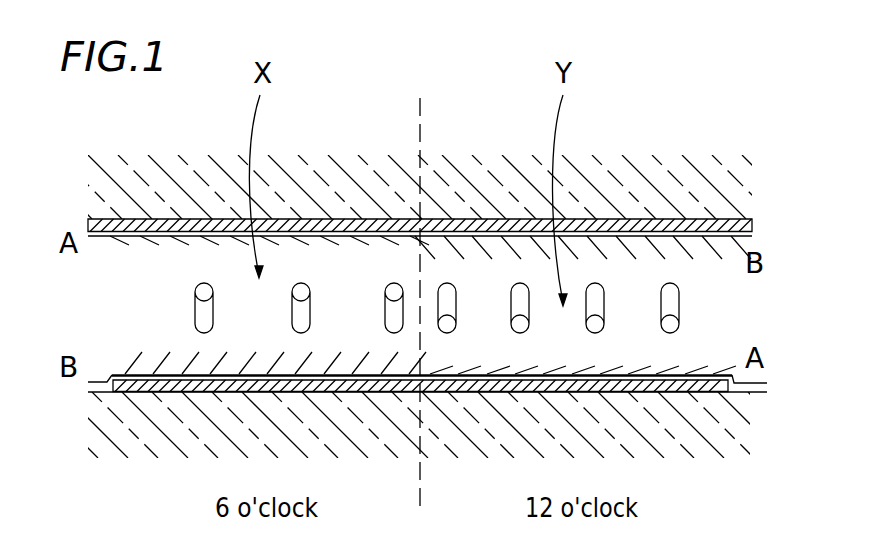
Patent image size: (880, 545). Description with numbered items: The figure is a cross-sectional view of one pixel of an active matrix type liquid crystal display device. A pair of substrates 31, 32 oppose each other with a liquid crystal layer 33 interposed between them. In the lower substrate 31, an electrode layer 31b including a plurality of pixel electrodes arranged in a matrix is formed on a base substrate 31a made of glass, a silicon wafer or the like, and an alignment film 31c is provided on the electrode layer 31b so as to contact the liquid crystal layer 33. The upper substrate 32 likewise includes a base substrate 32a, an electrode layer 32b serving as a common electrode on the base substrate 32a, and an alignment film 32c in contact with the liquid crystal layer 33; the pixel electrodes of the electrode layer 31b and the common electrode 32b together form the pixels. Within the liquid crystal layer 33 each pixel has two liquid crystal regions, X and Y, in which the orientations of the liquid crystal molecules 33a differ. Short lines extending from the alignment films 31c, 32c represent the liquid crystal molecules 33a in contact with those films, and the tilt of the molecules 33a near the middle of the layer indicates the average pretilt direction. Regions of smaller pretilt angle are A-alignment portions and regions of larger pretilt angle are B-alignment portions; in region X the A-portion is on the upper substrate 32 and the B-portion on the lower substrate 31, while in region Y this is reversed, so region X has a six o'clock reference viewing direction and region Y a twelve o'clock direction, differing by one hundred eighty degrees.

The substrate 31 is at (82, 423).
The base substrate 31a is at (733, 425).
The electrode layer 31b is at (760, 387).
The alignment film 31c is at (737, 377).
The substrate 32 is at (80, 189).
The base substrate 32a is at (725, 184).
The electrode layer 32b is at (752, 228).
The alignment film 32c is at (752, 237).
The liquid crystal layer 33 is at (102, 311).
The liquid crystal molecules 33a is at (680, 305).